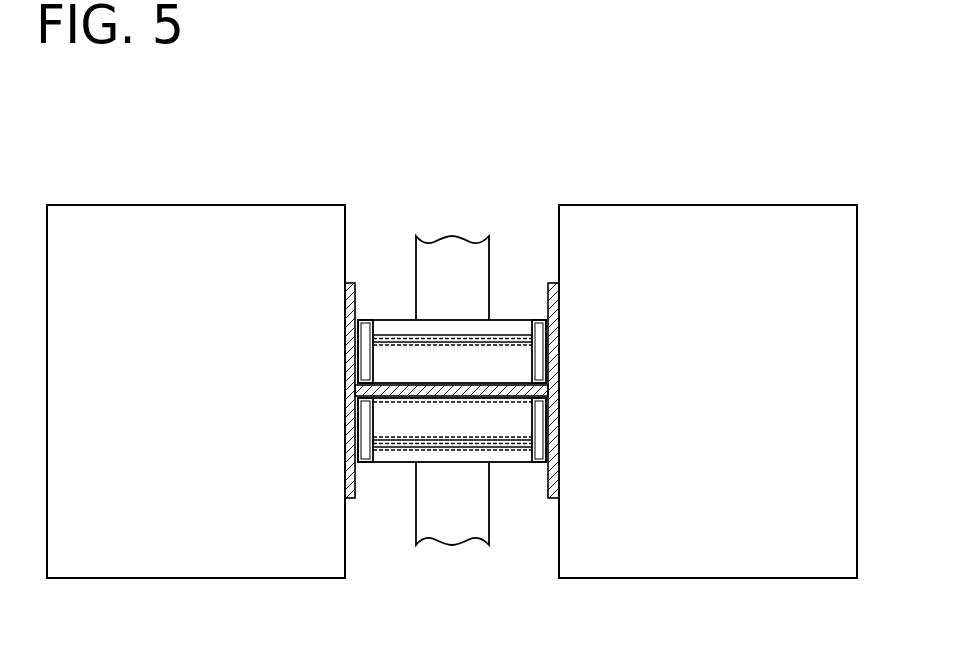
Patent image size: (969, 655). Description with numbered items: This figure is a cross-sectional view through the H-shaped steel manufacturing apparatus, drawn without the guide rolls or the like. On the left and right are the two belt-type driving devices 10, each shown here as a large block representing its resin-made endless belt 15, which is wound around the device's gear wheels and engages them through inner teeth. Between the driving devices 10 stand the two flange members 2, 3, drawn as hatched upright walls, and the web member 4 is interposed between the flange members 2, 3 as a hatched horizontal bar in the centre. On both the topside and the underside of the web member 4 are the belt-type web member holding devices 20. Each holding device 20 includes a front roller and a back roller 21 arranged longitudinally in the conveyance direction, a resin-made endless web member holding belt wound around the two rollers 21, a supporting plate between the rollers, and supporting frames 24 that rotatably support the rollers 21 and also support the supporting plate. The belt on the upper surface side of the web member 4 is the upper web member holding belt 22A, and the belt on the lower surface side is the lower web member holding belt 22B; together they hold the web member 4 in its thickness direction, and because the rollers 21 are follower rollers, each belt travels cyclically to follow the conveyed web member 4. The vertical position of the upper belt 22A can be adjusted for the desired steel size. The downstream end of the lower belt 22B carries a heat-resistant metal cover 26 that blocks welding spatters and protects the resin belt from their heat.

The belt-type driving device 10 is at (187, 191).
The endless belt 15 is at (446, 369).
The flange member 2 is at (345, 327).
The flange member 3 is at (561, 327).
The web member 4 is at (393, 395).
The belt-type web member holding device 20 is at (507, 247).
The roller 21 is at (400, 336).
The upper web member holding belt 22A is at (503, 336).
The lower web member holding belt 22B is at (503, 446).
The supporting frame 24 is at (416, 262).
The cover 26 is at (383, 452).